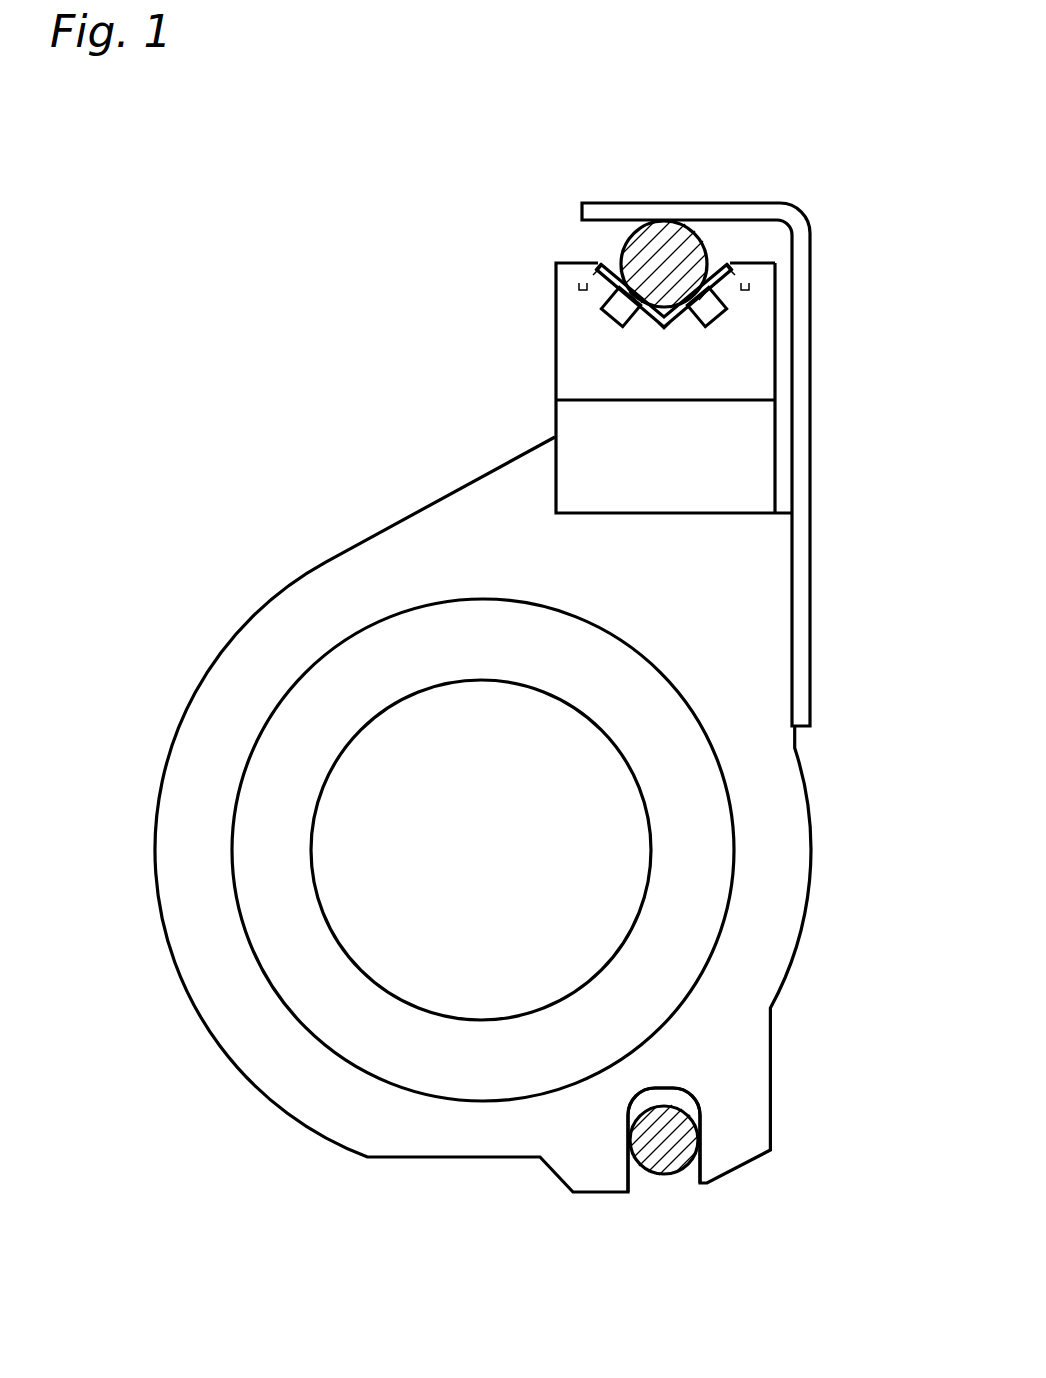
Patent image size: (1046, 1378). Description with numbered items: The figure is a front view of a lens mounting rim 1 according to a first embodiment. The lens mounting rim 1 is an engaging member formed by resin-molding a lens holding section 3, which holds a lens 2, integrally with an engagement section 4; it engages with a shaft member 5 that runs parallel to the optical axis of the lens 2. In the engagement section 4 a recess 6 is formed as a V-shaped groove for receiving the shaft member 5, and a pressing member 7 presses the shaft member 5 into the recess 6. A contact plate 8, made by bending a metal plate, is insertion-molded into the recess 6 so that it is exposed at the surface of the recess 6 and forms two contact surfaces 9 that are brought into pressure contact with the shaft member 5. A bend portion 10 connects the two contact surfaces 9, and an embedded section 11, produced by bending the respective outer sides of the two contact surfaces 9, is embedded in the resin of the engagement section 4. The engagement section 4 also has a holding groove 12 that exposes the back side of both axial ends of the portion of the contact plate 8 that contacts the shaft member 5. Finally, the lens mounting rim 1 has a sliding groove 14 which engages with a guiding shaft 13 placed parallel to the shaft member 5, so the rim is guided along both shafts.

The lens mounting rim 1 is at (381, 214).
The lens 2 is at (412, 750).
The lens holding section 3 is at (255, 618).
The engagement section 4 is at (553, 352).
The shaft member 5 is at (649, 222).
The recess 6 is at (665, 305).
The pressing member 7 is at (783, 206).
The contact plate 8 is at (597, 262).
The contact surfaces 9 is at (623, 258).
The bend portion 10 is at (673, 324).
The embedded section 11 is at (584, 278).
The holding groove 12 is at (612, 308).
The guiding shaft 13 is at (660, 1178).
The sliding groove 14 is at (693, 1184).